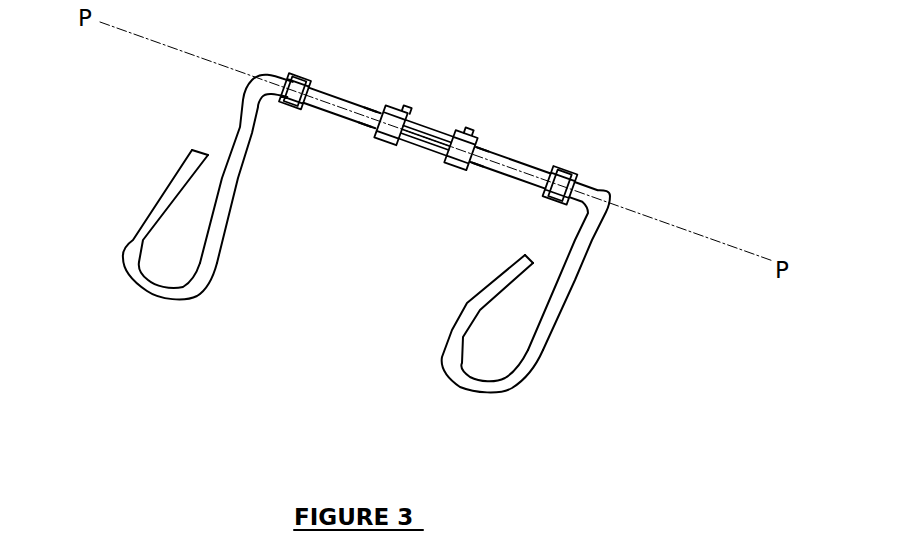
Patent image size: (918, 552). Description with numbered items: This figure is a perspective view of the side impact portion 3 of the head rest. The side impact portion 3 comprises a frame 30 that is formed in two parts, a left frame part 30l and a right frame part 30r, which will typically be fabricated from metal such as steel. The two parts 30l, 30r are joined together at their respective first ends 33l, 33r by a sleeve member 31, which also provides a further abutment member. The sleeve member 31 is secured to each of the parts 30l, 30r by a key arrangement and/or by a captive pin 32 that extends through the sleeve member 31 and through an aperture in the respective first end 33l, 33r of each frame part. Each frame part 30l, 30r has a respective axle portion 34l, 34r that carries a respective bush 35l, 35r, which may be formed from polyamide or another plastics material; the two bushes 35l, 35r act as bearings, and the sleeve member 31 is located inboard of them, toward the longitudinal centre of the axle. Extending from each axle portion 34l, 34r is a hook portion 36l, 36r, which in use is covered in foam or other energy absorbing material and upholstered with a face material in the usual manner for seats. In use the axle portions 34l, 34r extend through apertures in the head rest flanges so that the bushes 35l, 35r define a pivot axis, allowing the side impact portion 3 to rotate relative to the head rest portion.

The side impact portion 3 is at (640, 201).
The frame 30 is at (462, 102).
The left frame part 30l is at (235, 138).
The right frame part 30r is at (575, 282).
The sleeve member 31 is at (423, 150).
The captive pin 32 is at (387, 138).
The first end of left frame part 33l is at (362, 118).
The first end of right frame part 33r is at (482, 178).
The left axle portion 34l is at (346, 101).
The right axle portion 34r is at (517, 160).
The left bush 35l is at (306, 72).
The right bush 35r is at (603, 184).
The left hook portion 36l is at (205, 274).
The right hook portion 36r is at (520, 377).